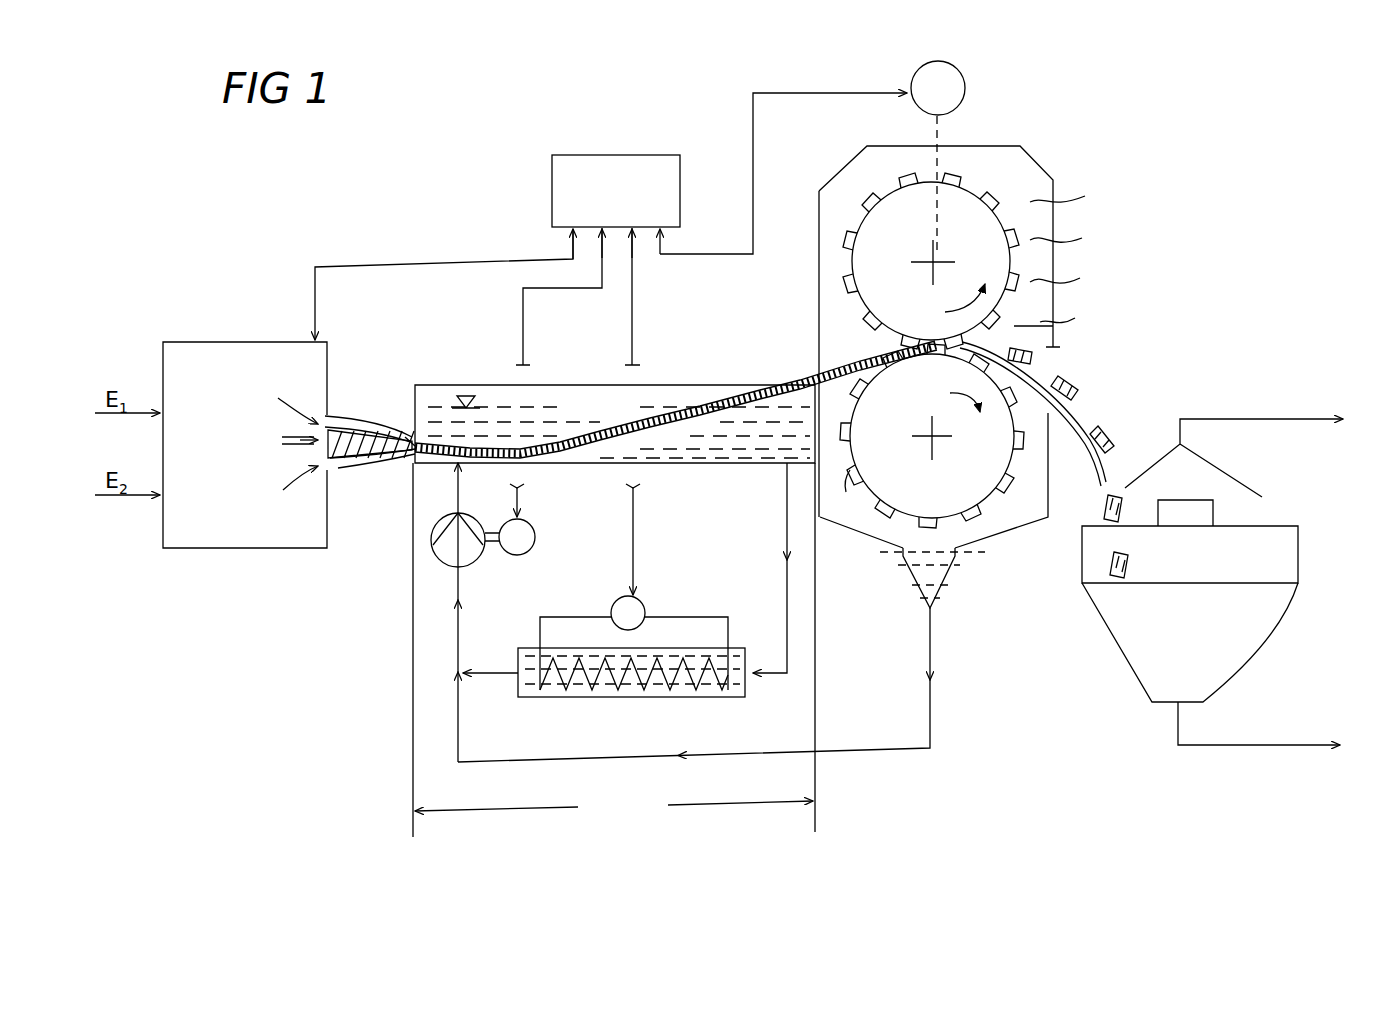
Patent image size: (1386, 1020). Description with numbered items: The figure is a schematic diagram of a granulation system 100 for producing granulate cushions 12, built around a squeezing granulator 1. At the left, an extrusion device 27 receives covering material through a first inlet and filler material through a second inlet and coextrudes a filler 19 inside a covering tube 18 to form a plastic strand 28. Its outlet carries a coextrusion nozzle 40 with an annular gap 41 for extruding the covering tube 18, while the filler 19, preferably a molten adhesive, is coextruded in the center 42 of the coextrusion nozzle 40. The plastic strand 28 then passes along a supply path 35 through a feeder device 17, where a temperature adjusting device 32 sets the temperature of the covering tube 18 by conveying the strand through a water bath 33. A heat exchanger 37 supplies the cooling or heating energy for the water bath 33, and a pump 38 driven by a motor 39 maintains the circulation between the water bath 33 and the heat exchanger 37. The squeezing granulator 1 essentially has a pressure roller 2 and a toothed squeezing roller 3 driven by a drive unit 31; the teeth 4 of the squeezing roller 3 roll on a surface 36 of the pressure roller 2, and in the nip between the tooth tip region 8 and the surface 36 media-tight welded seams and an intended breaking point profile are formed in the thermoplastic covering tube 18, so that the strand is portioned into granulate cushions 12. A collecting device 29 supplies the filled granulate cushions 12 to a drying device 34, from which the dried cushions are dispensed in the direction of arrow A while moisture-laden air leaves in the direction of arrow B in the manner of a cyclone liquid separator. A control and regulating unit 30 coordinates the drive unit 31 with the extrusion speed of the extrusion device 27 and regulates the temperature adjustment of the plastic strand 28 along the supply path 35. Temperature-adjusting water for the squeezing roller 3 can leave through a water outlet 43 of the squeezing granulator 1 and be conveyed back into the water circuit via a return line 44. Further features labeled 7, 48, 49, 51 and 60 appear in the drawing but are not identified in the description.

The squeezing granulator 1 is at (1066, 160).
The pressure roller 2 is at (1004, 480).
The toothed squeezing roller 3 is at (1064, 237).
The teeth 4 is at (1067, 195).
The roller drive 7 is at (1063, 275).
The tooth tip region 8 is at (1053, 317).
The granulate cushions 12 is at (1097, 402).
The feeder device 17 is at (466, 388).
The covering tube 18 is at (752, 395).
The filler 19 is at (680, 415).
The extrusion device 27 is at (233, 338).
The plastic strand 28 is at (578, 432).
The collecting device 29 is at (1072, 470).
The control and regulating unit 30 is at (560, 213).
The drive unit 31 is at (966, 86).
The temperature adjusting device 32 is at (517, 636).
The water bath 33 is at (722, 463).
The drying device 34 is at (1250, 624).
The supply path 35 is at (614, 650).
The surface 36 is at (844, 495).
The heat exchanger 37 is at (688, 697).
The pump 38 is at (437, 553).
The motor 39 is at (535, 548).
The coextrusion nozzle 40 is at (358, 412).
The annular gap 41 is at (410, 436).
The center 42 is at (378, 460).
The water outlet 43 is at (948, 574).
The return line 44 is at (525, 759).
The die 48 is at (340, 463).
The lower roller axis 49 is at (928, 440).
The upper roller axis 51 is at (930, 258).
The housing wall 60 is at (846, 208).
The granulation system 100 is at (1212, 190).